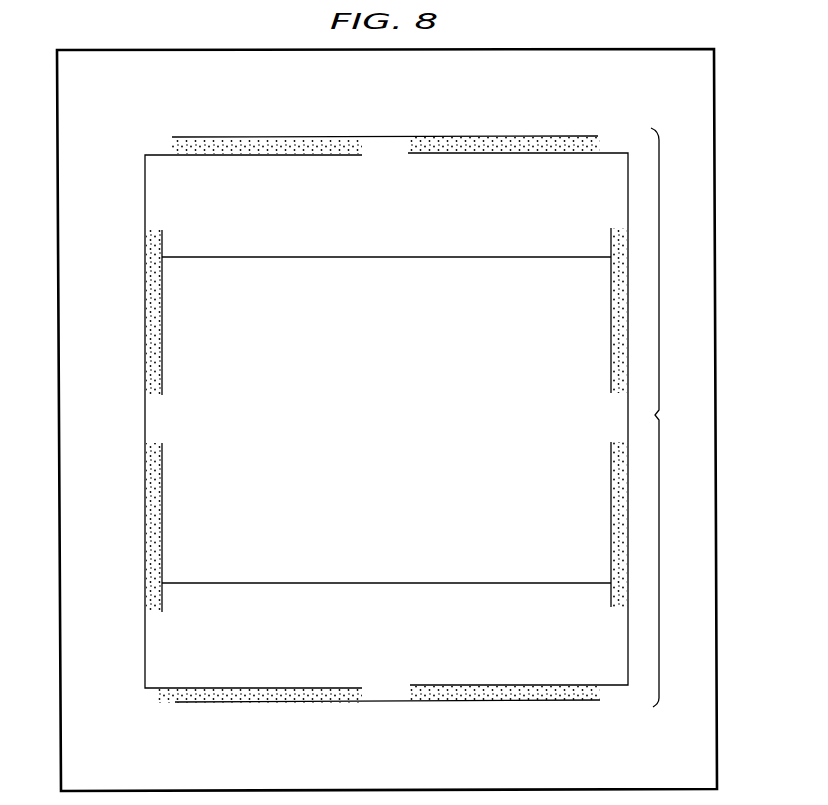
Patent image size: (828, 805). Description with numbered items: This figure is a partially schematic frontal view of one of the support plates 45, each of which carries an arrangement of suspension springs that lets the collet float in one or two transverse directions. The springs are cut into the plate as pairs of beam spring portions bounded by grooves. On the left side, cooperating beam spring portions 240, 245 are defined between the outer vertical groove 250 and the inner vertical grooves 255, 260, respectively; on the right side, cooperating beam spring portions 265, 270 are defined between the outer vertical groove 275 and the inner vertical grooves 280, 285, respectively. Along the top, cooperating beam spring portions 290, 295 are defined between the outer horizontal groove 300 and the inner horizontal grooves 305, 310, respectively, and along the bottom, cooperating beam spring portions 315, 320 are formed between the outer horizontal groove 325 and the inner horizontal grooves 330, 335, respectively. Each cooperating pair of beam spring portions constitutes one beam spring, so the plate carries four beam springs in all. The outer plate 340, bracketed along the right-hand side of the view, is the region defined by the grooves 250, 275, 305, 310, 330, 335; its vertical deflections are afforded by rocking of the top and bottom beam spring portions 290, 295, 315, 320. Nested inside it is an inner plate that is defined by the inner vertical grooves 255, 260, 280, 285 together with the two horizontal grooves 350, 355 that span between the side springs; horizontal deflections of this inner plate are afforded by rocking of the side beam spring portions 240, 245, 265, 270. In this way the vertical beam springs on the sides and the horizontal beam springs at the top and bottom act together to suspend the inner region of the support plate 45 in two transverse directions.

The support plate 45 is at (89, 572).
The beam spring portion 240 is at (152, 312).
The beam spring portion 245 is at (150, 572).
The outer vertical groove 250 is at (145, 383).
The inner vertical groove 255 is at (163, 378).
The inner vertical groove 260 is at (163, 496).
The beam spring portion 265 is at (618, 312).
The beam spring portion 270 is at (620, 565).
The outer vertical groove 275 is at (628, 167).
The inner vertical groove 280 is at (610, 357).
The inner vertical groove 285 is at (612, 491).
The beam spring portion 290 is at (295, 146).
The beam spring portion 295 is at (471, 148).
The outer horizontal groove 300 is at (378, 136).
The inner horizontal groove 305 is at (344, 156).
The inner horizontal groove 310 is at (448, 155).
The beam spring portion 315 is at (290, 698).
The beam spring portion 320 is at (469, 698).
The outer horizontal groove 325 is at (525, 703).
The inner horizontal groove 330 is at (254, 688).
The inner horizontal groove 335 is at (551, 685).
The outer plate 340 is at (683, 417).
The horizontal groove 350 is at (380, 257).
The horizontal groove 355 is at (494, 584).